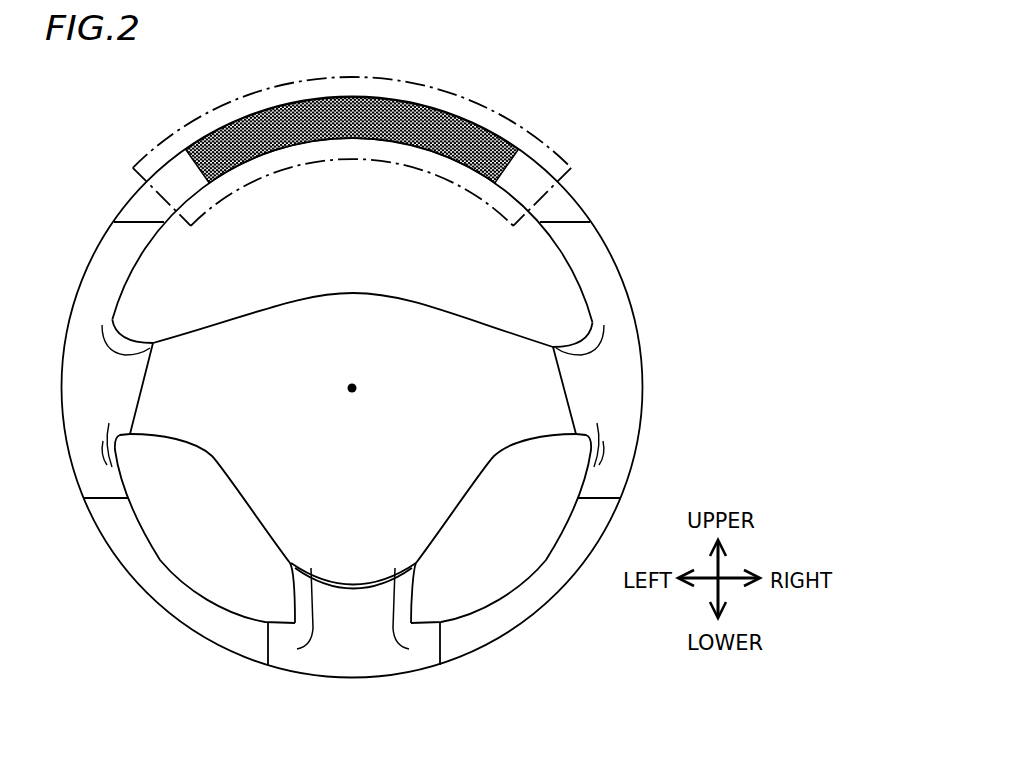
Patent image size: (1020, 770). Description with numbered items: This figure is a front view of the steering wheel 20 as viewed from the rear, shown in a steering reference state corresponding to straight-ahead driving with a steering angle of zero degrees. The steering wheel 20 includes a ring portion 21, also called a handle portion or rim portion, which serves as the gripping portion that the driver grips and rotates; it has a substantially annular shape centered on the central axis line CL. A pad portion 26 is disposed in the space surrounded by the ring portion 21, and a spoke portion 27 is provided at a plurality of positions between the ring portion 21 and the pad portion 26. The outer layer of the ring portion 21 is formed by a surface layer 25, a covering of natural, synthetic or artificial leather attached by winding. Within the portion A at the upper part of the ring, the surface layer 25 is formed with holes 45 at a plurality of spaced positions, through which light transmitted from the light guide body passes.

The steering wheel 20 is at (643, 241).
The surface layer 25 is at (613, 293).
The ring portion 21 is at (410, 387).
The pad portion 26 is at (361, 295).
The spoke portion 27 is at (112, 460).
The holes 45 is at (272, 152).
The portion A is at (493, 104).
The central axis line CL is at (358, 388).